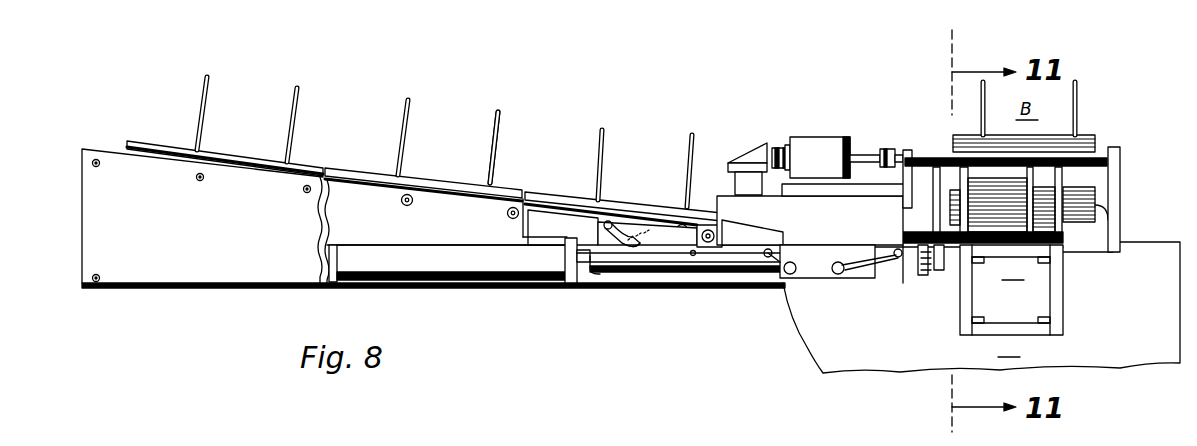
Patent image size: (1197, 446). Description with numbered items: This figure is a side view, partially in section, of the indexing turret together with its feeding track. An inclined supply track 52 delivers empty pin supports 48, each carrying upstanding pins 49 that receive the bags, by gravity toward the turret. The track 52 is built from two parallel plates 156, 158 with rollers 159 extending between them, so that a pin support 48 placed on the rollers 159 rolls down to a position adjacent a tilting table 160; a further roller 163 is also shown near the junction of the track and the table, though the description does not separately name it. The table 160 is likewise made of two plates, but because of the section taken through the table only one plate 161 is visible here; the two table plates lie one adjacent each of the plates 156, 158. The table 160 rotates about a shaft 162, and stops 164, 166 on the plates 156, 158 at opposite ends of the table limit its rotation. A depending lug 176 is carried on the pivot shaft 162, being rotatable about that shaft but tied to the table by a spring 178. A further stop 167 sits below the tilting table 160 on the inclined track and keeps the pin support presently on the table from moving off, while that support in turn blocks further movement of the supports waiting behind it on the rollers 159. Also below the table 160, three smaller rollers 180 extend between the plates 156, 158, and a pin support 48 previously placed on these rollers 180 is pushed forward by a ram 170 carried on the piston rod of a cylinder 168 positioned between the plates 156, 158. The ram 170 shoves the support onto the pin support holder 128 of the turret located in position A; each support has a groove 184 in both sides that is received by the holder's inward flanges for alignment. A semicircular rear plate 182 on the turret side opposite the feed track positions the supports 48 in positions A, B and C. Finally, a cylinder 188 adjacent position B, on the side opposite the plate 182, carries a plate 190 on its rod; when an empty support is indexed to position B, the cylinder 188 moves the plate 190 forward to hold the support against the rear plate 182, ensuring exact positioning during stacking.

The pin support 48 is at (333, 166).
The pins 49 is at (292, 105).
The supply track 52 is at (479, 114).
The pin support holder 128 is at (978, 322).
The plate 156 is at (212, 233).
The plate 158 is at (377, 226).
The rollers 159 is at (410, 196).
The tilting table 160 is at (605, 193).
The plate 161 is at (566, 234).
The shaft 162 is at (600, 277).
The roller 163 is at (539, 194).
The stop 164 is at (525, 240).
The stop 166 is at (693, 256).
The stop 167 is at (721, 210).
The cylinder 168 is at (363, 263).
The ram 170 is at (820, 245).
The depending lug 176 is at (632, 236).
The spring 178 is at (640, 246).
The rollers 180 is at (768, 258).
The rear plate 182 is at (1115, 148).
The groove 184 is at (920, 157).
The cylinder 188 is at (805, 137).
The plate 190 is at (905, 152).